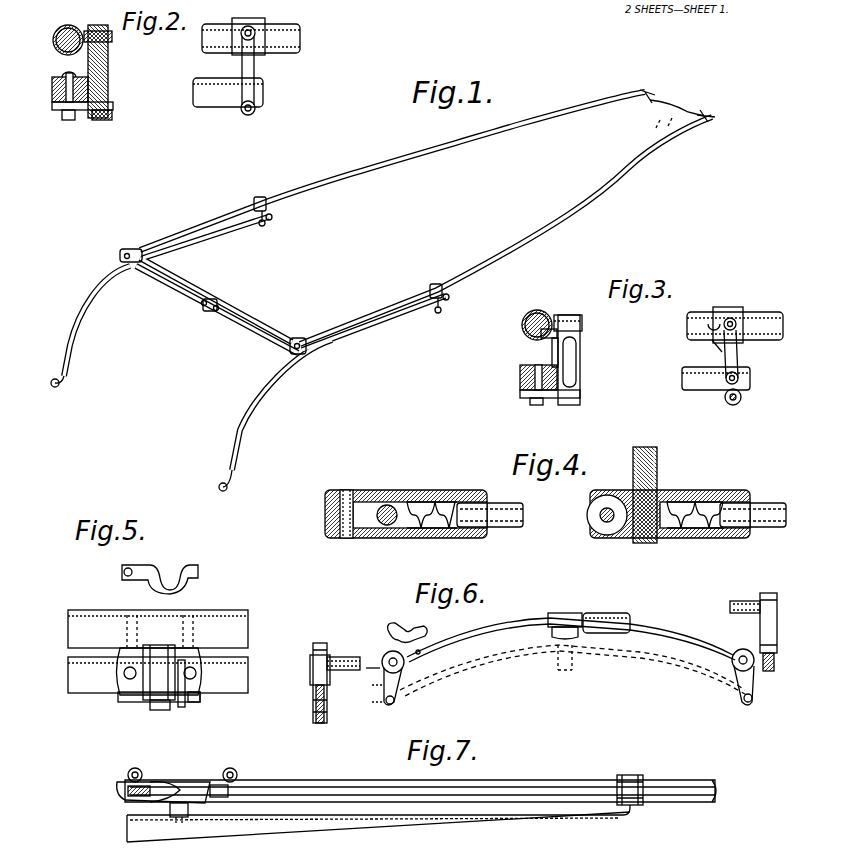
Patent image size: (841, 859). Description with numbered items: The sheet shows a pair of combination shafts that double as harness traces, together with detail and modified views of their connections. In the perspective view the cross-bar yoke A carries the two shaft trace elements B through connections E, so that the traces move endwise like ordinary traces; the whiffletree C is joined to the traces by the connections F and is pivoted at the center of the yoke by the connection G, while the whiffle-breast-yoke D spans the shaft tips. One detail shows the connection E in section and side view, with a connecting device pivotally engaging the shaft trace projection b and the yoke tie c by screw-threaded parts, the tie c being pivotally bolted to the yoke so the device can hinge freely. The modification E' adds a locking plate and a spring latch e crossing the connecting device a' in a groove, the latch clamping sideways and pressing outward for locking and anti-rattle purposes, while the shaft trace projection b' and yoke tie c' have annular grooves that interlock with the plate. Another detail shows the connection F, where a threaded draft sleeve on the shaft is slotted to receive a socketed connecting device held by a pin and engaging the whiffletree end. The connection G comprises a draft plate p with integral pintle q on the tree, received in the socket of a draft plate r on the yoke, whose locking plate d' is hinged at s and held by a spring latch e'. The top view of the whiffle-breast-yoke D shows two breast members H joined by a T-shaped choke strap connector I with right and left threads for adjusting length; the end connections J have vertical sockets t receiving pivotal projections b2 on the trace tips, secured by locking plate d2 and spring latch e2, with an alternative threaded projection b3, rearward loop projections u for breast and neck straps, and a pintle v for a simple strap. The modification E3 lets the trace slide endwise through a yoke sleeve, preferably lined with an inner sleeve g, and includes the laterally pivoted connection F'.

In FIG. 1, the cross-bar yoke A is at (203, 368).
In FIG. 2, the cross-bar yoke A is at (58, 82).
In FIG. 3, the cross-bar yoke A is at (519, 325).
In FIG. 4, the cross-bar yoke A is at (753, 501).
In FIG. 5, the cross-bar yoke A is at (143, 675).
In FIG. 1, the shaft trace element B is at (426, 221).
In FIG. 2, the shaft trace element B is at (55, 40).
In FIG. 3, the shaft trace element B is at (525, 375).
In FIG. 7, the shaft trace element B is at (420, 777).
In FIG. 1, the whiffletree C is at (216, 300).
In FIG. 4, the whiffletree C is at (655, 495).
In FIG. 5, the whiffletree C is at (144, 629).
In FIG. 1, the whiffle-breast-yoke D is at (677, 104).
In FIG. 6, the whiffle-breast-yoke D is at (565, 631).
In FIG. 1, the trace and yoke connection E is at (346, 251).
In FIG. 2, the trace and yoke connection E is at (230, 62).
In FIG. 1, the whiffletree and shaft trace connection F is at (208, 290).
In FIG. 4, the whiffletree and shaft trace connection F is at (406, 500).
In FIG. 1, the whiffletree and cross-bar-yoke connection G is at (202, 318).
In FIG. 5, the whiffletree and cross-bar-yoke connection G is at (159, 692).
In FIG. 7, the whiffletree and cross-bar-yoke connection G is at (168, 813).
In FIG. 6, the breast member H is at (574, 652).
In FIG. 6, the T-shaped choke strap connector I is at (606, 612).
In FIG. 6, the whiffle-breast-yoke and shaft trace connection J is at (555, 667).
In FIG. 2, the shaft trace projection b is at (107, 37).
In FIG. 2, the yoke tie c is at (71, 113).
In FIG. 7, the spring latch e is at (145, 776).
In FIG. 3, the connecting device a' is at (547, 342).
In FIG. 3, the shaft trace projection b' is at (580, 319).
In FIG. 3, the yoke tie c' is at (538, 396).
In FIG. 5, the locking plate d' is at (206, 705).
In FIG. 5, the spring latch e' is at (184, 692).
In FIG. 3, the modified trace and yoke connection E' is at (702, 348).
In FIG. 7, the whiffletree and shaft trace connection F' is at (168, 773).
In FIG. 7, the modified trace and yoke connection E3 is at (392, 823).
In FIG. 6, the pivotal projection b2 is at (335, 679).
In FIG. 6, the screw-threaded projection b3 is at (753, 616).
In FIG. 6, the locking plate d2 is at (410, 634).
In FIG. 6, the spring latch e2 is at (422, 662).
In FIG. 7, the inner sleeve g is at (637, 777).
In FIG. 5, the draft plate p is at (125, 612).
In FIG. 5, the pintle q is at (155, 640).
In FIG. 5, the draft plate r is at (130, 680).
In FIG. 5, the hinge s is at (128, 700).
In FIG. 6, the socket t is at (370, 667).
In FIG. 6, the rearward projection u is at (373, 687).
In FIG. 6, the pintle v is at (373, 704).